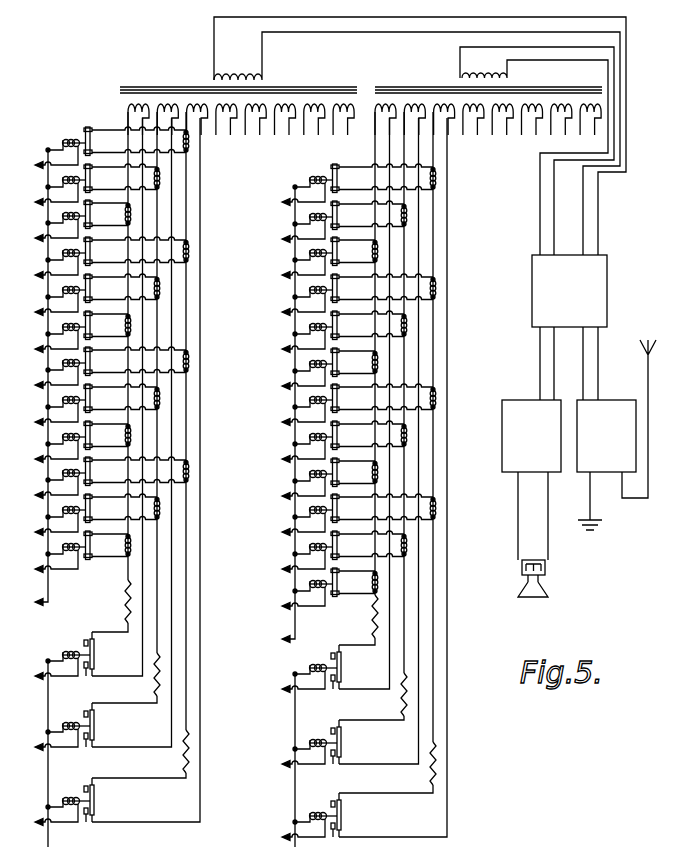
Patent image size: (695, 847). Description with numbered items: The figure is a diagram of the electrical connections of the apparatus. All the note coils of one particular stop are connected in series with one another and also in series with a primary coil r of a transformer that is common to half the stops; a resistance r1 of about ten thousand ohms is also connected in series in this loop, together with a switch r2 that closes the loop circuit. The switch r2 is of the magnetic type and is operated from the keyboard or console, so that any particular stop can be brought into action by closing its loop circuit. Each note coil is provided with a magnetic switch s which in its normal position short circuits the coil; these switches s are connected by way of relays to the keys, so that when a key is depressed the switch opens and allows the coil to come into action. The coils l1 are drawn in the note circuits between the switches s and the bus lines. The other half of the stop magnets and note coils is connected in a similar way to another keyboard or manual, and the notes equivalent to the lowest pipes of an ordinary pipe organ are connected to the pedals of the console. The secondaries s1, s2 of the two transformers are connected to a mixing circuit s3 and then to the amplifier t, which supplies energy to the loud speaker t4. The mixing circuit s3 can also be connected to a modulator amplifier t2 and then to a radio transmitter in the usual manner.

The primary coil r is at (126, 103).
The secondary s1 is at (420, 136).
The secondary s2 is at (537, 151).
The mixing circuit s3 is at (569, 327).
The amplifier t is at (531, 436).
The modulator amplifier t2 is at (616, 435).
The loud speaker t4 is at (550, 588).
The magnetic switch s is at (78, 244).
The inductance coils l1 is at (163, 290).
The resistance r1 is at (126, 600).
The switch r2 is at (88, 642).